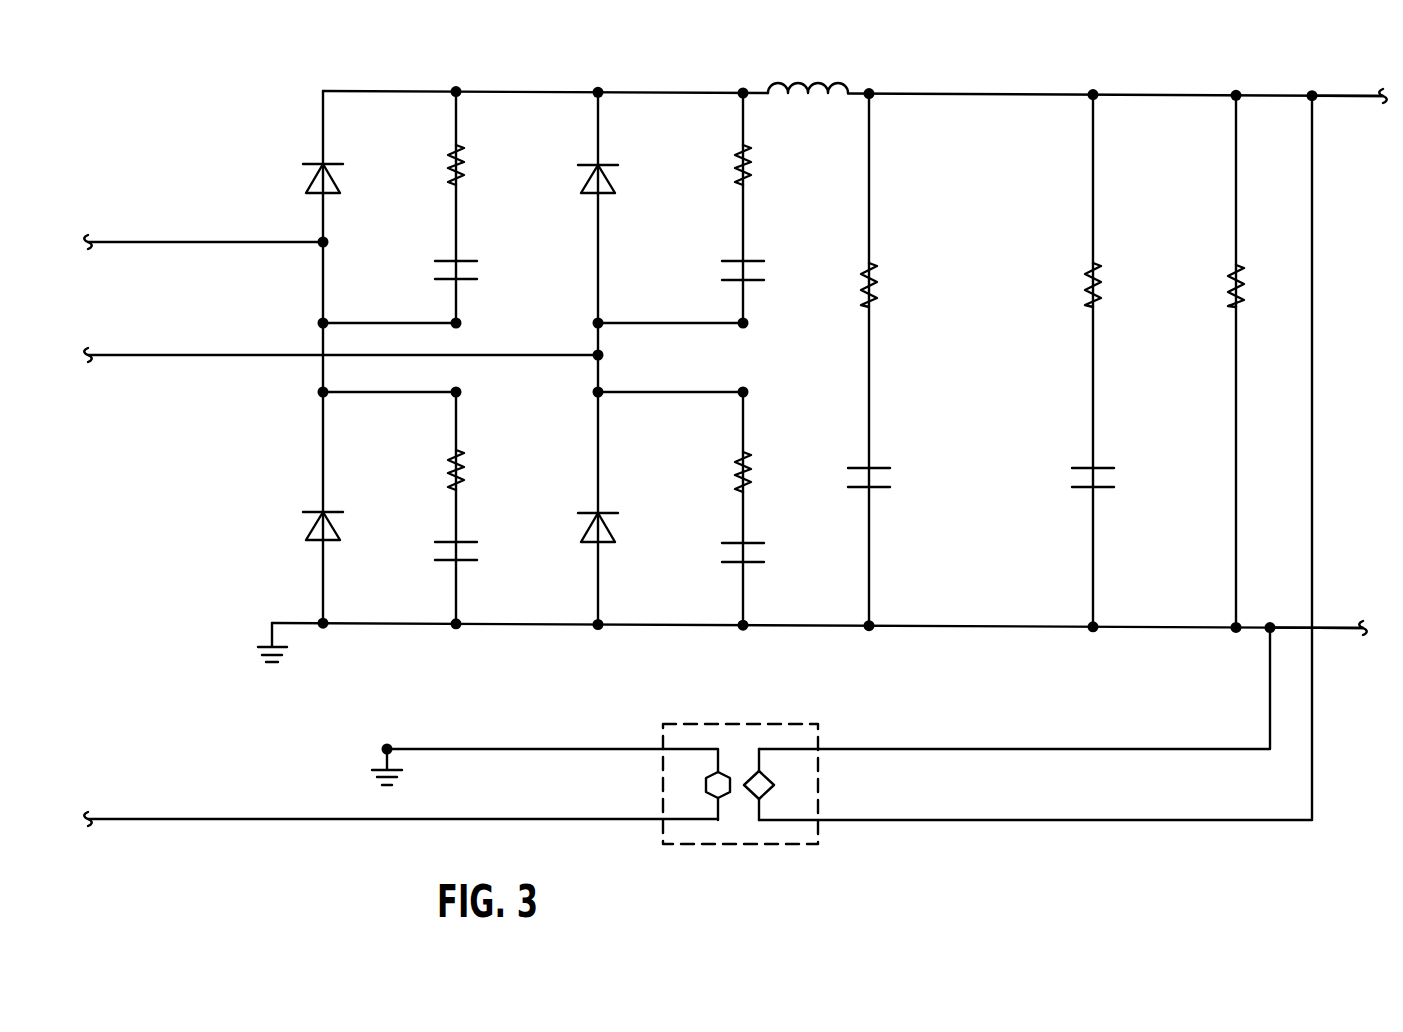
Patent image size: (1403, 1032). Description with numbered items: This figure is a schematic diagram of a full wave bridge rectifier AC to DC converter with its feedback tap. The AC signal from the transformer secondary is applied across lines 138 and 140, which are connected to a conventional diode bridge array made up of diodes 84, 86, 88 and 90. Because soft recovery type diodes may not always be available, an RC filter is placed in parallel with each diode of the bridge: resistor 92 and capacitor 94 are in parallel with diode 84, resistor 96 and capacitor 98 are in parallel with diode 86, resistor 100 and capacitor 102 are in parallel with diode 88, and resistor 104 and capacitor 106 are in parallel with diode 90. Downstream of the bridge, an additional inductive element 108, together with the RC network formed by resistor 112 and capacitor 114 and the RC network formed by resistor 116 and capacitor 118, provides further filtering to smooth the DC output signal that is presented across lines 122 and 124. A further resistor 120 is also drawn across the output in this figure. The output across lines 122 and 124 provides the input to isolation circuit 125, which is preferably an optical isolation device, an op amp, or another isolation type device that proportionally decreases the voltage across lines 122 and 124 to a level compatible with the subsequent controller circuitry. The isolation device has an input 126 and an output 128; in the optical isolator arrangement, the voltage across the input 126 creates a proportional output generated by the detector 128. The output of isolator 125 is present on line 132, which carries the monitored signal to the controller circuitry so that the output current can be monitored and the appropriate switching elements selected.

The diode 84 is at (306, 179).
The diode 86 is at (340, 524).
The diode 88 is at (606, 176).
The diode 90 is at (610, 527).
The resistor 92 is at (464, 170).
The capacitor 94 is at (472, 272).
The resistor 96 is at (466, 470).
The capacitor 98 is at (472, 553).
The resistor 100 is at (752, 168).
The capacitor 102 is at (760, 272).
The resistor 104 is at (752, 460).
The capacitor 106 is at (760, 552).
The inductive element 108 is at (793, 96).
The RC network resistor 112 is at (874, 288).
The RC network capacitor 114 is at (880, 477).
The RC network resistor 116 is at (1100, 285).
The RC network capacitor 118 is at (1105, 480).
The resistor 120 is at (1232, 288).
The output line 122 is at (1328, 96).
The output line 124 is at (1337, 627).
The isolation circuit 125 is at (720, 844).
The input 126 is at (766, 782).
The output 128 is at (706, 785).
The output line 132 is at (194, 819).
The line 138 is at (157, 242).
The line 140 is at (168, 355).